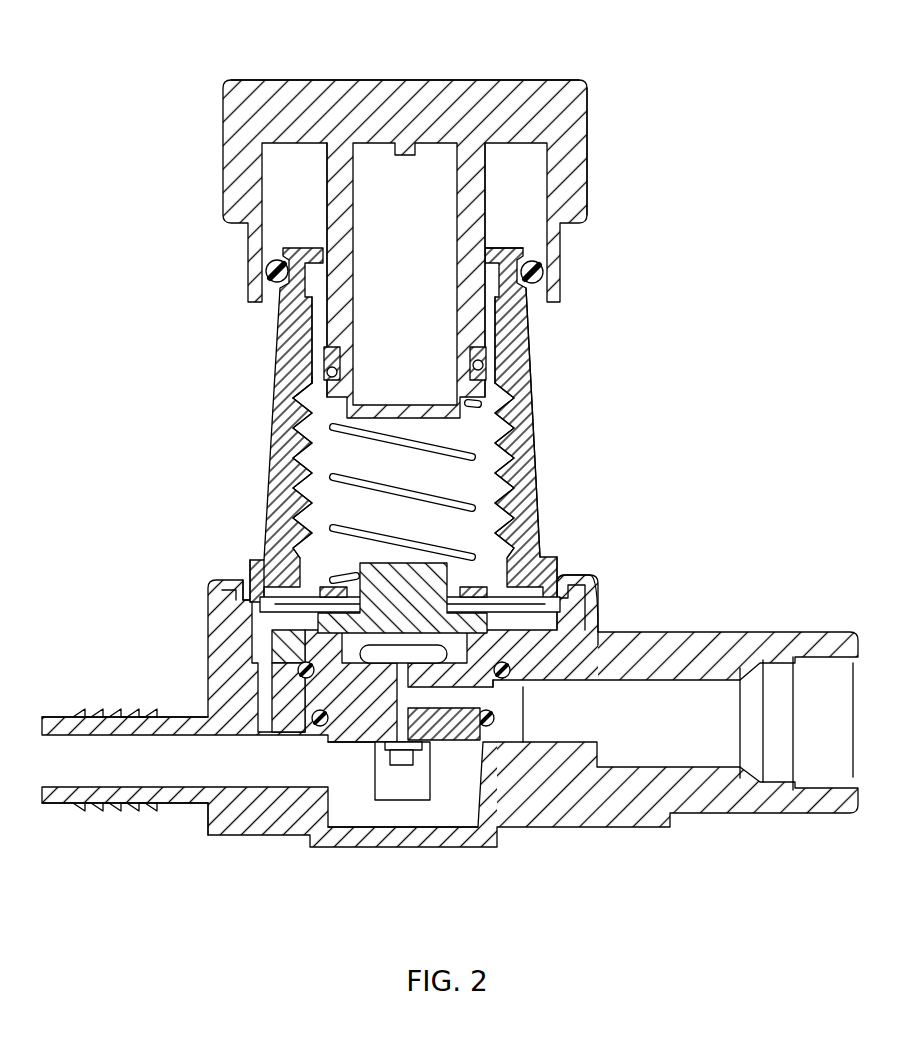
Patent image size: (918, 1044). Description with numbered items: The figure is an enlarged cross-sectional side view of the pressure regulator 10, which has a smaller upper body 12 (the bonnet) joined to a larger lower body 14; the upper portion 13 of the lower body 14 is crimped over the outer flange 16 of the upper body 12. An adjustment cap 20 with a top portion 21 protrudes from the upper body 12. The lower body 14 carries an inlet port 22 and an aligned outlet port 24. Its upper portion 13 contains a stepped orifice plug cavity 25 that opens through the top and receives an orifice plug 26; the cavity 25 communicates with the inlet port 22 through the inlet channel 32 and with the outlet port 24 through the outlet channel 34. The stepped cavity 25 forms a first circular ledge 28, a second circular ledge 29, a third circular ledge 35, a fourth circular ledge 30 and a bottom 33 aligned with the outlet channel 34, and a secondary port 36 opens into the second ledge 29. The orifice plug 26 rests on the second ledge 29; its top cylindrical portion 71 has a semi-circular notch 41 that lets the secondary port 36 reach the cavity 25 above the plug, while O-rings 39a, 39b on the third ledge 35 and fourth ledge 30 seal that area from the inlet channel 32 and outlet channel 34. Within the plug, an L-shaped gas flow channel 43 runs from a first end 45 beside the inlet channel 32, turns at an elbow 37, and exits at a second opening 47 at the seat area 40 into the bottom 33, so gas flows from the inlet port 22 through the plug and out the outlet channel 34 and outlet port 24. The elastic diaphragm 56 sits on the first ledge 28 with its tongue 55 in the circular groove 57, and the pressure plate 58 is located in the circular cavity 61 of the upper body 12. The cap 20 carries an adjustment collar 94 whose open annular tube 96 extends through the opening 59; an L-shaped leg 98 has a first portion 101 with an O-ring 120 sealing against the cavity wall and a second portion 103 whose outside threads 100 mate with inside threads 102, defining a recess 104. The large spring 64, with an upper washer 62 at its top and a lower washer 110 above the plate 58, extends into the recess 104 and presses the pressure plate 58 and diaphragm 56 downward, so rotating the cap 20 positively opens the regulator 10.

The pressure regulator 10 is at (634, 386).
The upper body 12 is at (258, 462).
The upper portion of the lower body 13 is at (608, 587).
The lower body 14 is at (645, 828).
The outer flange 16 is at (258, 596).
The adjustment cap 20 is at (531, 76).
The top portion 21 is at (263, 98).
The inlet port 22 is at (837, 678).
The outlet port 24 is at (60, 760).
The orifice plug cavity 25 is at (260, 594).
The orifice plug 26 is at (316, 754).
The first circular ledge 28 is at (577, 585).
The second circular ledge 29 is at (598, 648).
The fourth circular ledge 30 is at (208, 720).
The inlet channel 32 is at (507, 705).
The bottom 33 is at (385, 820).
The outlet channel 34 is at (273, 772).
The third circular ledge 35 is at (298, 672).
The secondary port 36 is at (300, 697).
The elbow 37 is at (363, 743).
The O-ring 39a is at (535, 683).
The O-ring 39b is at (490, 712).
The seat area 40 is at (395, 762).
The semi-circular notch 41 is at (296, 646).
The L-shaped gas flow channel 43 is at (434, 726).
The first end 45 is at (445, 728).
The second opening 47 is at (403, 722).
The tongue 55 is at (240, 590).
The elastic diaphragm 56 is at (302, 625).
The circular groove 57 is at (240, 608).
The pressure plate 58 is at (480, 582).
The opening 59 is at (505, 258).
The circular cavity 61 is at (514, 488).
The upper washer 62 is at (486, 352).
The large spring 64 is at (514, 442).
The top cylindrical portion 71 is at (532, 636).
The adjustment collar 94 is at (316, 178).
The open annular tube 96 is at (477, 183).
The L-shaped leg 98 is at (488, 316).
The outside threads 100 is at (306, 432).
The first portion 101 is at (322, 320).
The inside threads 102 is at (292, 440).
The second portion 103 is at (318, 392).
The recess 104 is at (334, 388).
The lower washer 110 is at (500, 512).
The O-ring 120 is at (545, 274).